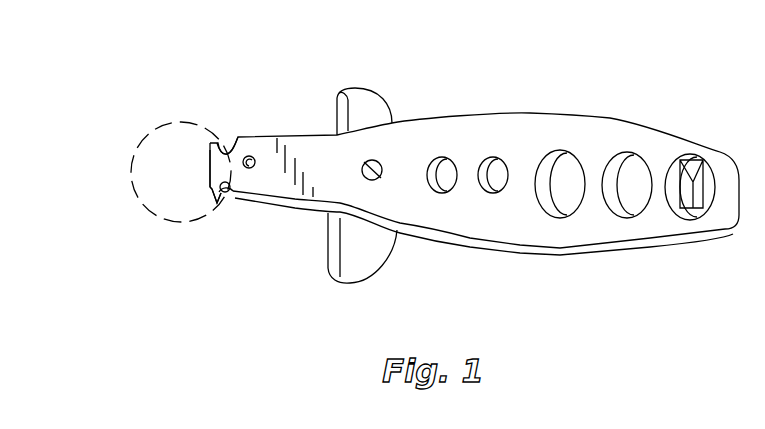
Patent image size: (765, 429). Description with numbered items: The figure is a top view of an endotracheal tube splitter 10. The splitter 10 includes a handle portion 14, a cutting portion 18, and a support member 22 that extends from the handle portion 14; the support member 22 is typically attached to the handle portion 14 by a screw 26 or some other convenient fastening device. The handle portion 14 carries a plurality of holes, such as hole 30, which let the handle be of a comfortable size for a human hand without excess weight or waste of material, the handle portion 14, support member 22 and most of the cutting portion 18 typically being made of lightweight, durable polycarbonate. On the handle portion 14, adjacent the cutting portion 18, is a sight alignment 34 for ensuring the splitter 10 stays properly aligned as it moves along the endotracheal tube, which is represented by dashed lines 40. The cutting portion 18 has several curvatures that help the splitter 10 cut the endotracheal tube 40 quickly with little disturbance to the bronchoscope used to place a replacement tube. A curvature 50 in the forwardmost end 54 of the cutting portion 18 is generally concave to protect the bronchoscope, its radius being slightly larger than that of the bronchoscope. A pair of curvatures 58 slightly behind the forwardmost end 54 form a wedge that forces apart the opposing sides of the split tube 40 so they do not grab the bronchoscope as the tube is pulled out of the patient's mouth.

The endotracheal tube splitter 10 is at (393, 172).
The handle portion 14 is at (610, 118).
The cutting portion 18 is at (238, 137).
The support member 22 is at (373, 92).
The screw 26 is at (382, 168).
The hole 30 is at (635, 216).
The sight alignment 34 is at (250, 156).
The endotracheal tube 40 is at (142, 142).
The curvature 50 is at (212, 170).
The forwardmost end 54 is at (215, 204).
The pair of curvatures 58 is at (227, 194).